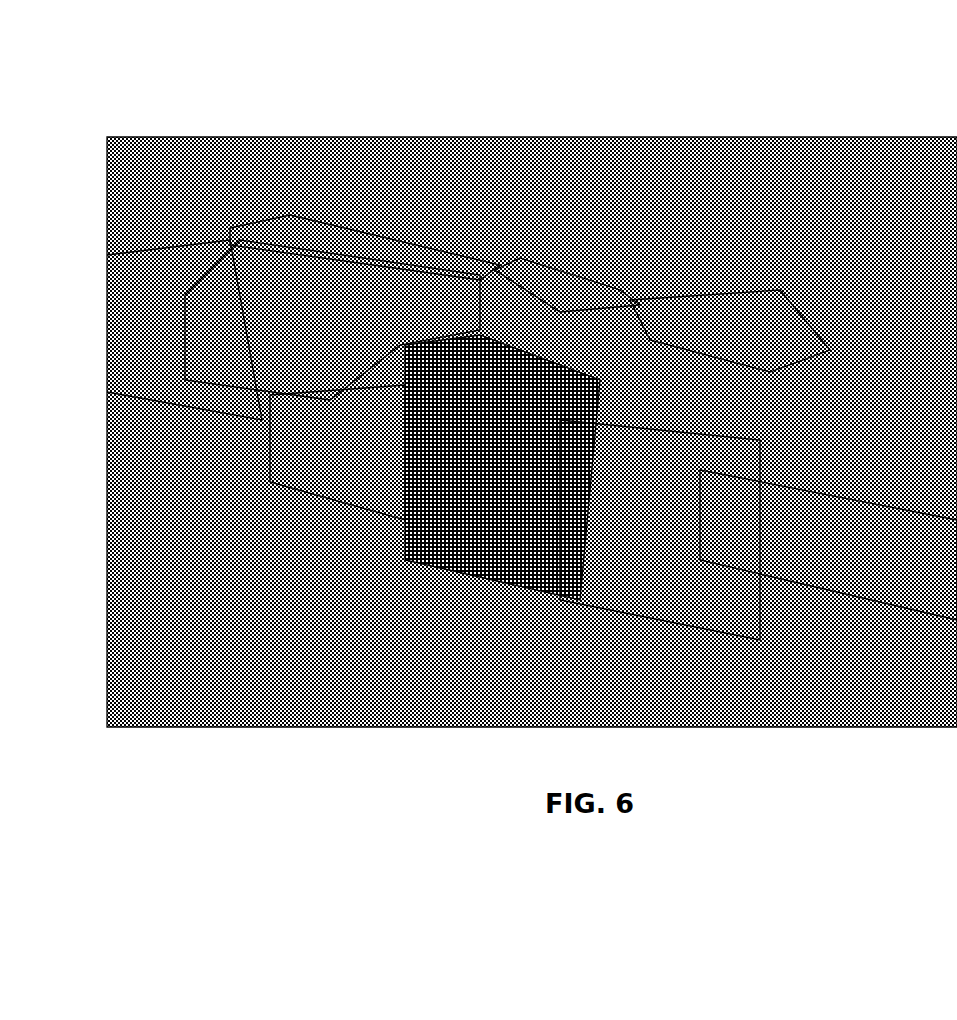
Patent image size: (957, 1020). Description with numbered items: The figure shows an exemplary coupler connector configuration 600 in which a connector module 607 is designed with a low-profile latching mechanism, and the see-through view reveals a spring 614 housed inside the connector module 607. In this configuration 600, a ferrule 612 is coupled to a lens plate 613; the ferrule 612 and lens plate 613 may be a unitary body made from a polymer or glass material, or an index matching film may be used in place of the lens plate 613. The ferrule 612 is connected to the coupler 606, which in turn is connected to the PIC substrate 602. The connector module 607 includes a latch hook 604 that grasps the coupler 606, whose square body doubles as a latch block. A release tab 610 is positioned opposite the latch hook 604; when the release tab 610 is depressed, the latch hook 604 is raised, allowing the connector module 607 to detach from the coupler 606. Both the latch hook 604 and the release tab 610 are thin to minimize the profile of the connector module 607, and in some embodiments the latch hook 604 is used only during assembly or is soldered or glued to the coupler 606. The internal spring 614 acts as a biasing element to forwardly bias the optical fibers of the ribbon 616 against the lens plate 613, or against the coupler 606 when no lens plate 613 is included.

The coupler connector configuration 600 is at (593, 101).
The PIC substrate 602 is at (112, 323).
The latch hook 604 is at (237, 243).
The coupler 606 is at (358, 238).
The connector module 607 is at (547, 267).
The release tab 610 is at (772, 295).
The ferrule 612 is at (390, 558).
The lens plate 613 is at (342, 513).
The spring 614 is at (683, 612).
The ribbon 616 is at (867, 510).